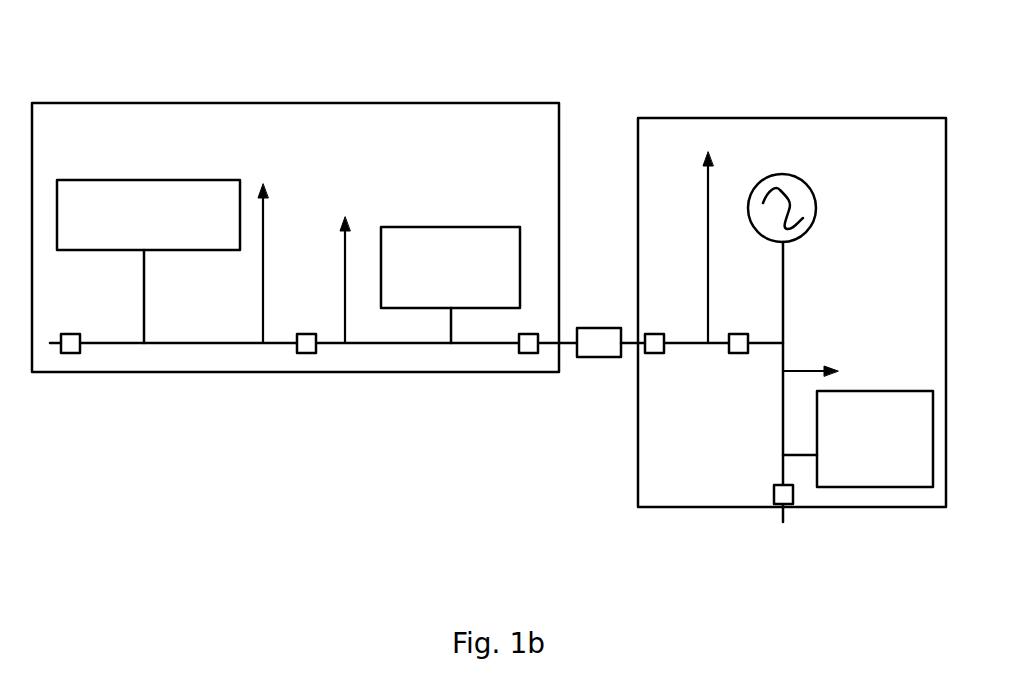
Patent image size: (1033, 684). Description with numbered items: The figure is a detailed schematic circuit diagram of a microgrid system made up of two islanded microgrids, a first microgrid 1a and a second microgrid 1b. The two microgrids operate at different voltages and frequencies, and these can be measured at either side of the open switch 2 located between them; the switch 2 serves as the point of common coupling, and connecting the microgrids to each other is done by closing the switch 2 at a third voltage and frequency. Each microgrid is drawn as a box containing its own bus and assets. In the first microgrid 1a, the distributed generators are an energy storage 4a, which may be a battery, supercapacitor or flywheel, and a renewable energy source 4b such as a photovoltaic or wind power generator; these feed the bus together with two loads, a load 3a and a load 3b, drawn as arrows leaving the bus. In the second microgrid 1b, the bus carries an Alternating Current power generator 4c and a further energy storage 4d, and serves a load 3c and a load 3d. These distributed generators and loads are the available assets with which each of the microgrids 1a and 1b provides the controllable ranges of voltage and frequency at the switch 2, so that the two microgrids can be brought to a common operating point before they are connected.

The first microgrid 1a is at (295, 215).
The second microgrid 1b is at (792, 292).
The switch 2 is at (596, 335).
The load 3a is at (260, 241).
The load 3b is at (354, 262).
The load 3c is at (707, 233).
The load 3d is at (861, 369).
The energy storage 4a is at (82, 190).
The renewable energy source 4b is at (450, 240).
The Alternating Current power generator 4c is at (798, 205).
The energy storage 4d is at (921, 468).